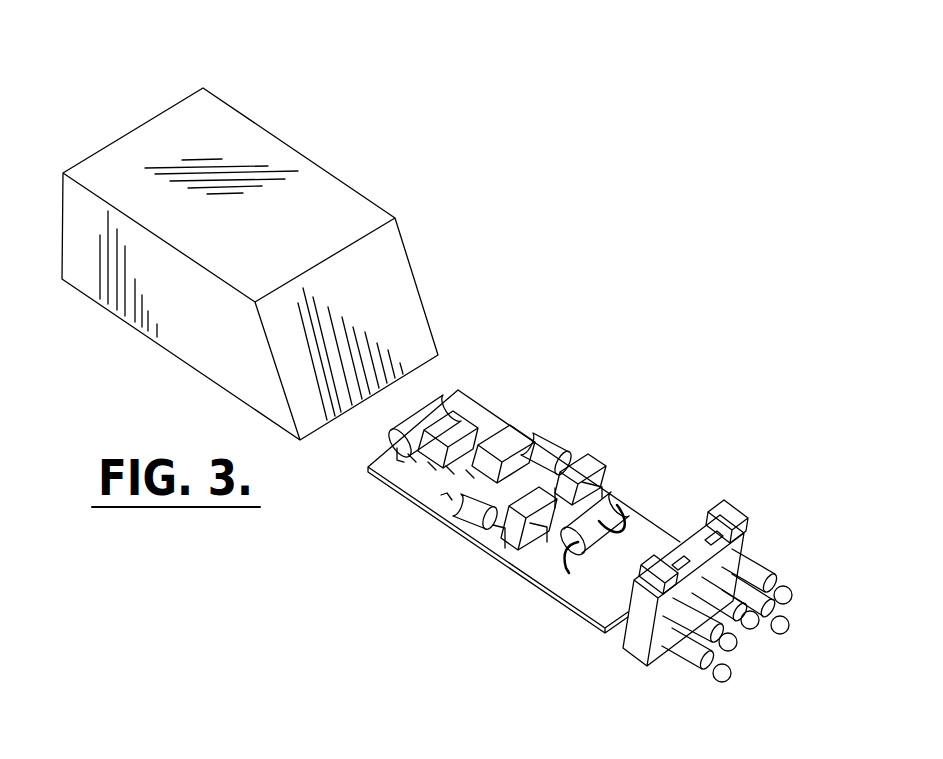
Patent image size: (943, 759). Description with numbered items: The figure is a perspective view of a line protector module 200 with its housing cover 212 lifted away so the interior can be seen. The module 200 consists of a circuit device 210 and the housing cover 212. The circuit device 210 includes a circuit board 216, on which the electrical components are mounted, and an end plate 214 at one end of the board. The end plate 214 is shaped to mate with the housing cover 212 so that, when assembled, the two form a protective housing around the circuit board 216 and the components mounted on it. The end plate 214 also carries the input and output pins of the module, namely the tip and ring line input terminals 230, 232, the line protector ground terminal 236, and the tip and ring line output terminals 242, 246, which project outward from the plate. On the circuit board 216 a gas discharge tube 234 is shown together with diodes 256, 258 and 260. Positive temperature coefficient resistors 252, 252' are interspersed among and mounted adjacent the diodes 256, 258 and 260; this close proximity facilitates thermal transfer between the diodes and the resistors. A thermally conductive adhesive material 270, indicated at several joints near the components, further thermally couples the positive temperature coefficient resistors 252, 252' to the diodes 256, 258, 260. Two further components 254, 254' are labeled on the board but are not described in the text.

The line protector module 200 is at (398, 80).
The circuit device 210 is at (660, 417).
The housing cover 212 is at (175, 132).
The end plate 214 is at (736, 524).
The circuit board 216 is at (563, 603).
The tip line input terminal 230 is at (787, 620).
The ring line input terminal 232 is at (723, 673).
The gas discharge tube 234 is at (608, 522).
The line protector ground terminal 236 is at (752, 623).
The tip line output terminal 242 is at (702, 630).
The ring line output terminal 246 is at (767, 568).
The positive temperature coefficient resistor 252 is at (475, 397).
The positive temperature coefficient resistor 252' is at (534, 471).
The resistor 254 is at (593, 464).
The resistor 254' is at (448, 525).
The diode 256 is at (432, 397).
The diode 258 is at (543, 440).
The diode 260 is at (487, 428).
The thermally conductive adhesive material 270 is at (470, 474).